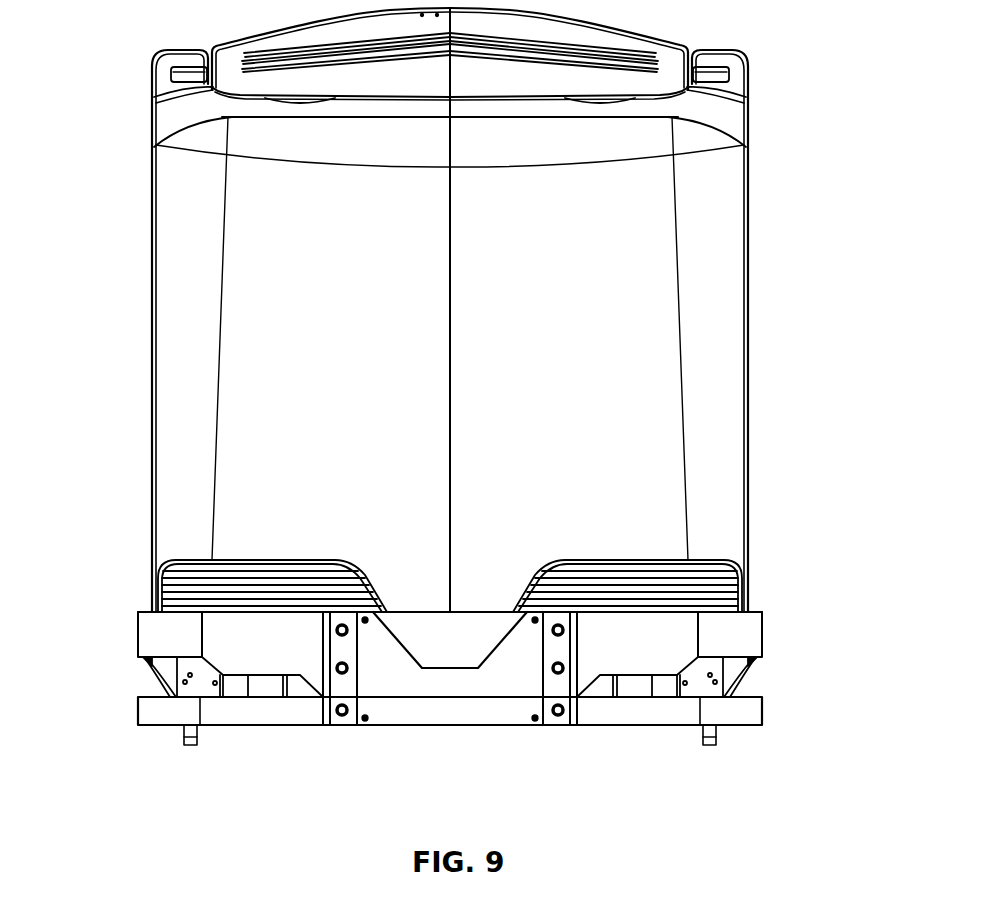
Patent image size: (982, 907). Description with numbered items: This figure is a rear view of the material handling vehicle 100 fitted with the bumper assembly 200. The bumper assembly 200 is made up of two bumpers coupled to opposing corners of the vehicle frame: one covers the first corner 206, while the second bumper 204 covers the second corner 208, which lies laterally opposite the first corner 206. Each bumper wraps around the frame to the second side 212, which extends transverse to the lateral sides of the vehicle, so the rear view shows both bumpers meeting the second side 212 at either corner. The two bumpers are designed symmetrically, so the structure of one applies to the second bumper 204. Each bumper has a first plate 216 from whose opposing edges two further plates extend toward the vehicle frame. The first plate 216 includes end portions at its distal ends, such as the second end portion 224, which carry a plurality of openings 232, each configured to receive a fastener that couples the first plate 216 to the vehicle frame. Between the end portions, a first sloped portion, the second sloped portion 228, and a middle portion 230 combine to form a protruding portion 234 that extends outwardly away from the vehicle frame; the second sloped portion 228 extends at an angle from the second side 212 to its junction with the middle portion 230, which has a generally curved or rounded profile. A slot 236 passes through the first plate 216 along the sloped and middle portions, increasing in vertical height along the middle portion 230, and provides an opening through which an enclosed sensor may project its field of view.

The material handling vehicle 100 is at (451, 306).
The bumper assembly 200 is at (466, 700).
The second bumper 204 is at (108, 610).
The first corner 206 is at (704, 541).
The second corner 208 is at (238, 545).
The second side 212 is at (466, 653).
The first plate 216 is at (450, 742).
The second end portion 224 is at (450, 717).
The second sloped portion 228 is at (305, 713).
The middle portion 230 is at (155, 725).
The openings 232 is at (354, 674).
The protruding portion 234 is at (470, 706).
The slot 236 is at (142, 668).